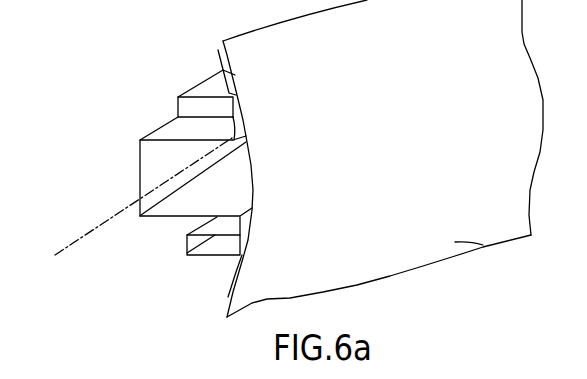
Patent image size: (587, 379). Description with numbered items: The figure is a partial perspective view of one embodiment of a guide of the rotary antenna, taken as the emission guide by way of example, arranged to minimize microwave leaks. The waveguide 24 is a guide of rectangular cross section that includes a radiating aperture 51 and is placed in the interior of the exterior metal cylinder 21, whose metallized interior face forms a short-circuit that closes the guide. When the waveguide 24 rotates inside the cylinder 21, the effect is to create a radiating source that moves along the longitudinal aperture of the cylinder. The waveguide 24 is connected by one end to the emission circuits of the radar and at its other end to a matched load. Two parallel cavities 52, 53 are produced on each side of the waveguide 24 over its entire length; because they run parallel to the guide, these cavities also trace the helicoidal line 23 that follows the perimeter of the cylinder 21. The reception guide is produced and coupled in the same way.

The metal cylinder 21 is at (482, 248).
The helicoidal line 23 is at (103, 220).
The emission waveguide 24 is at (172, 128).
The radiating aperture 51 is at (240, 173).
The parallel cavity 52 is at (192, 245).
The parallel cavity 53 is at (213, 90).